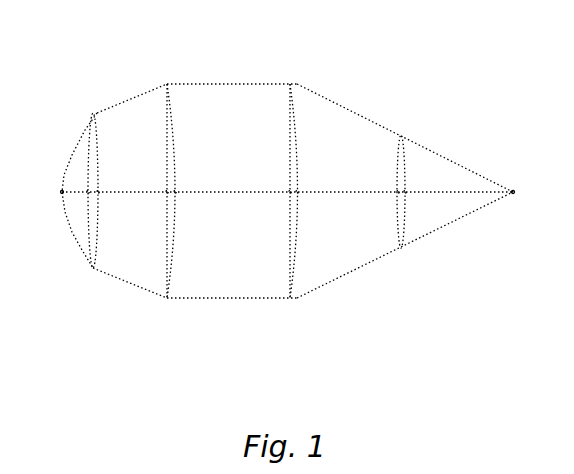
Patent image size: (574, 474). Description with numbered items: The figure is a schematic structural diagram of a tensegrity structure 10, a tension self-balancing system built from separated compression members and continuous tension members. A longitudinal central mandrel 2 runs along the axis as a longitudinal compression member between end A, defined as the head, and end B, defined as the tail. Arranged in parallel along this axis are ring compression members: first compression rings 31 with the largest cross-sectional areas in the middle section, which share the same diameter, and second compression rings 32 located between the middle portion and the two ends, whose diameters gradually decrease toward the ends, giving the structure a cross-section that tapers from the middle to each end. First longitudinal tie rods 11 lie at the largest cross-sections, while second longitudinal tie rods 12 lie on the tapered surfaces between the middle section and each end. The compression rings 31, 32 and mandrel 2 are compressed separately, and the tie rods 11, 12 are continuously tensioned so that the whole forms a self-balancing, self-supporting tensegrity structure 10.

The tensegrity structure 10 is at (348, 325).
The first longitudinal tie rod 11 is at (205, 83).
The second longitudinal tie rod 12 is at (122, 107).
The longitudinal central mandrel 2 is at (200, 190).
The first compression ring 31 is at (170, 270).
The second compression ring 32 is at (95, 248).
The end A (head) A is at (526, 194).
The end B (tail) B is at (52, 194).